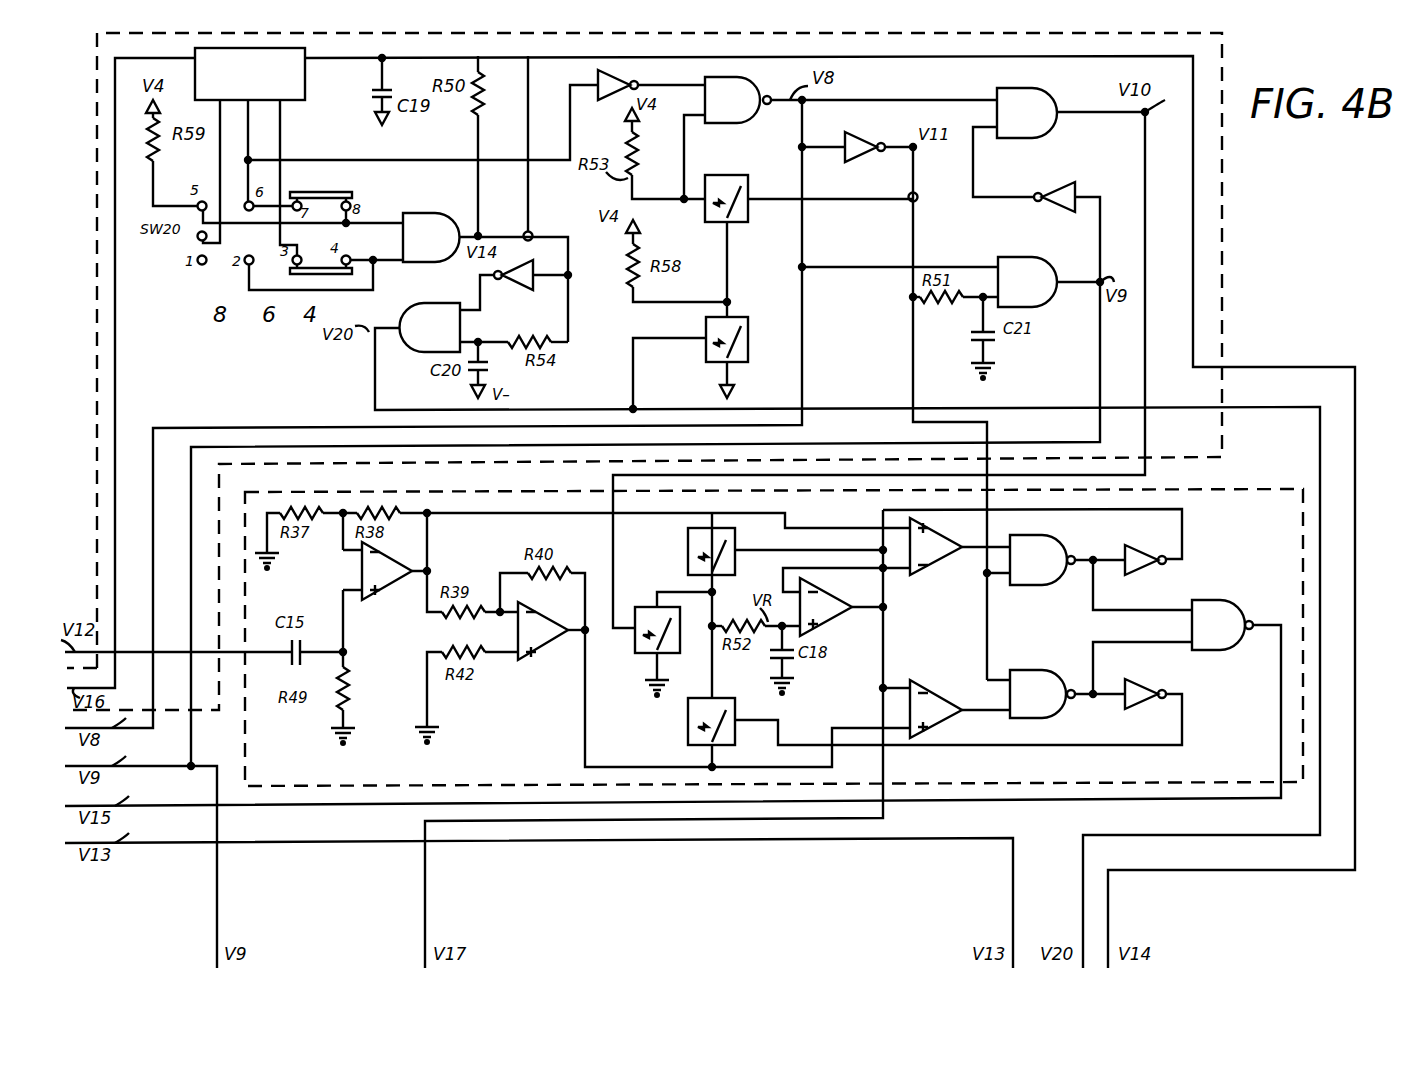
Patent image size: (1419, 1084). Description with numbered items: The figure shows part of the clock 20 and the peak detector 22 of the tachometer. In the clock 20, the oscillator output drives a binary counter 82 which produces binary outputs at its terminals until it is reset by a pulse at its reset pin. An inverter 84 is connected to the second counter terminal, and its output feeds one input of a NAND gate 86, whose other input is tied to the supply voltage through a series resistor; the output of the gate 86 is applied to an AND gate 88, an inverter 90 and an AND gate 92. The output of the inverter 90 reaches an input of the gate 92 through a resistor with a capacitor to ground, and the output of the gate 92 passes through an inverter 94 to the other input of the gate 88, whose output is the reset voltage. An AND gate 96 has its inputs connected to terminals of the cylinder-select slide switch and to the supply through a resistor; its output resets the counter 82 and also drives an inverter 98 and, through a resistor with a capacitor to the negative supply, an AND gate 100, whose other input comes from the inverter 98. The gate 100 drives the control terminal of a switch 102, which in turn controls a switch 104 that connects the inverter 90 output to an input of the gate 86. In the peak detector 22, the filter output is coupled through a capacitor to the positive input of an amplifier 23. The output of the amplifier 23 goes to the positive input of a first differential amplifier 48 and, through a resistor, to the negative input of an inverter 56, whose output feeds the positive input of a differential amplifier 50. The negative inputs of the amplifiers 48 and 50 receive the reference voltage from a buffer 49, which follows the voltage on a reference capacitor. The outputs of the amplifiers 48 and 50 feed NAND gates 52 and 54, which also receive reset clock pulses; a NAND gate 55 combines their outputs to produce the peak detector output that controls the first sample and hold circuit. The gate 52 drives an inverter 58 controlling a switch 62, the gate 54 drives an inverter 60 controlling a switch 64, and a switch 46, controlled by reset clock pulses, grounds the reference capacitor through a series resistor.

The clock 20 is at (1222, 182).
The peak detector 22 is at (1240, 488).
The amplifier 23 is at (380, 590).
The switch 46 is at (648, 607).
The first differential amplifier 48 is at (930, 568).
The buffer 49 is at (828, 622).
The differential amplifier 50 is at (936, 688).
The NAND gate 52 is at (1030, 535).
The NAND gate 54 is at (1030, 718).
The NAND gate 55 is at (1215, 650).
The inverter 56 is at (535, 655).
The inverter 58 is at (1135, 572).
The inverter 60 is at (1135, 706).
The switch 62 is at (688, 540).
The switch 64 is at (688, 735).
The binary counter 82 is at (305, 78).
The inverter 84 is at (612, 100).
The NAND gate 86 is at (755, 78).
The AND gate 88 is at (1050, 70).
The inverter 90 is at (850, 160).
The AND gate 92 is at (1020, 255).
The inverter 94 is at (1055, 185).
The AND gate 96 is at (443, 210).
The inverter 98 is at (530, 262).
The AND gate 100 is at (440, 300).
The switch 102 is at (738, 362).
The switch 104 is at (735, 222).